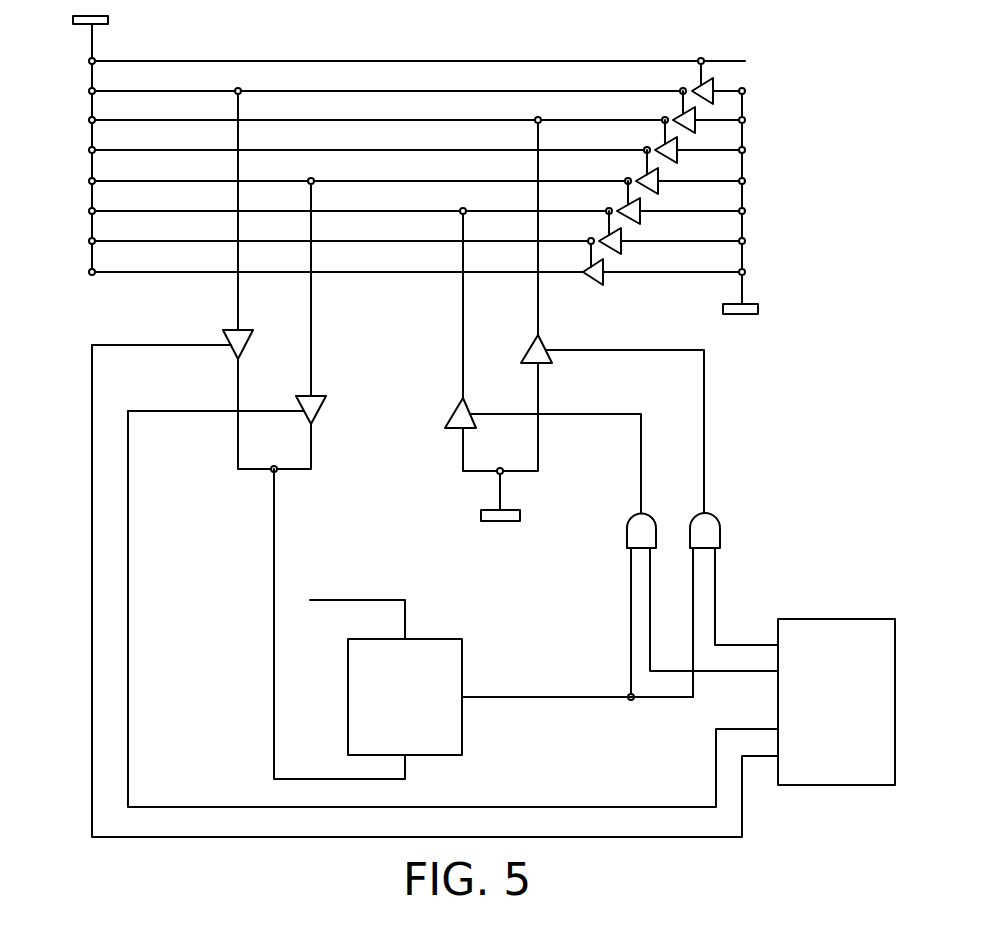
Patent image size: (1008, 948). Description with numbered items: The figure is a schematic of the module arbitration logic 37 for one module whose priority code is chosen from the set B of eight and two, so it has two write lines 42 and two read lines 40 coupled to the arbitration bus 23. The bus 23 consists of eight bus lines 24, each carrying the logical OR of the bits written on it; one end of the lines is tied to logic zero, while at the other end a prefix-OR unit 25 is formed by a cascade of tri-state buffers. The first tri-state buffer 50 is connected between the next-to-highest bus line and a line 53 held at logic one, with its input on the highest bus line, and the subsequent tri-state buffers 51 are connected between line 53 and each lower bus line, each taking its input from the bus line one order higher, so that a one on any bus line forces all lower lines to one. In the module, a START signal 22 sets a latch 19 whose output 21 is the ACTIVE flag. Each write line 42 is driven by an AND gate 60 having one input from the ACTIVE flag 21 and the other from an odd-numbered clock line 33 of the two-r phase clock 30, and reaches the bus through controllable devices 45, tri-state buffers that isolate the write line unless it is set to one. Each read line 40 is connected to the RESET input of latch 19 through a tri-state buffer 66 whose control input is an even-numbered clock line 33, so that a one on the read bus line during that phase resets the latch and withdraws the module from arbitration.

The latch 19 is at (466, 662).
The output 21 is at (492, 693).
The START signal 22 is at (406, 620).
The arbitration bus 23 is at (444, 59).
The bus lines 24 is at (122, 91).
The prefix-OR unit 25 is at (714, 56).
The 2r phase clock 30 is at (869, 616).
The clock lines 33 is at (733, 645).
The module arbitration logic 37 is at (753, 452).
The read lines 40 is at (238, 297).
The write lines 42 is at (538, 310).
The controllable devices 45 is at (522, 346).
The first tri-state buffer 50 is at (715, 82).
The subsequent tri-state buffers 51 is at (698, 128).
The line 53 is at (749, 208).
The AND gate 60 is at (632, 526).
The tri-state buffer 66 is at (244, 342).